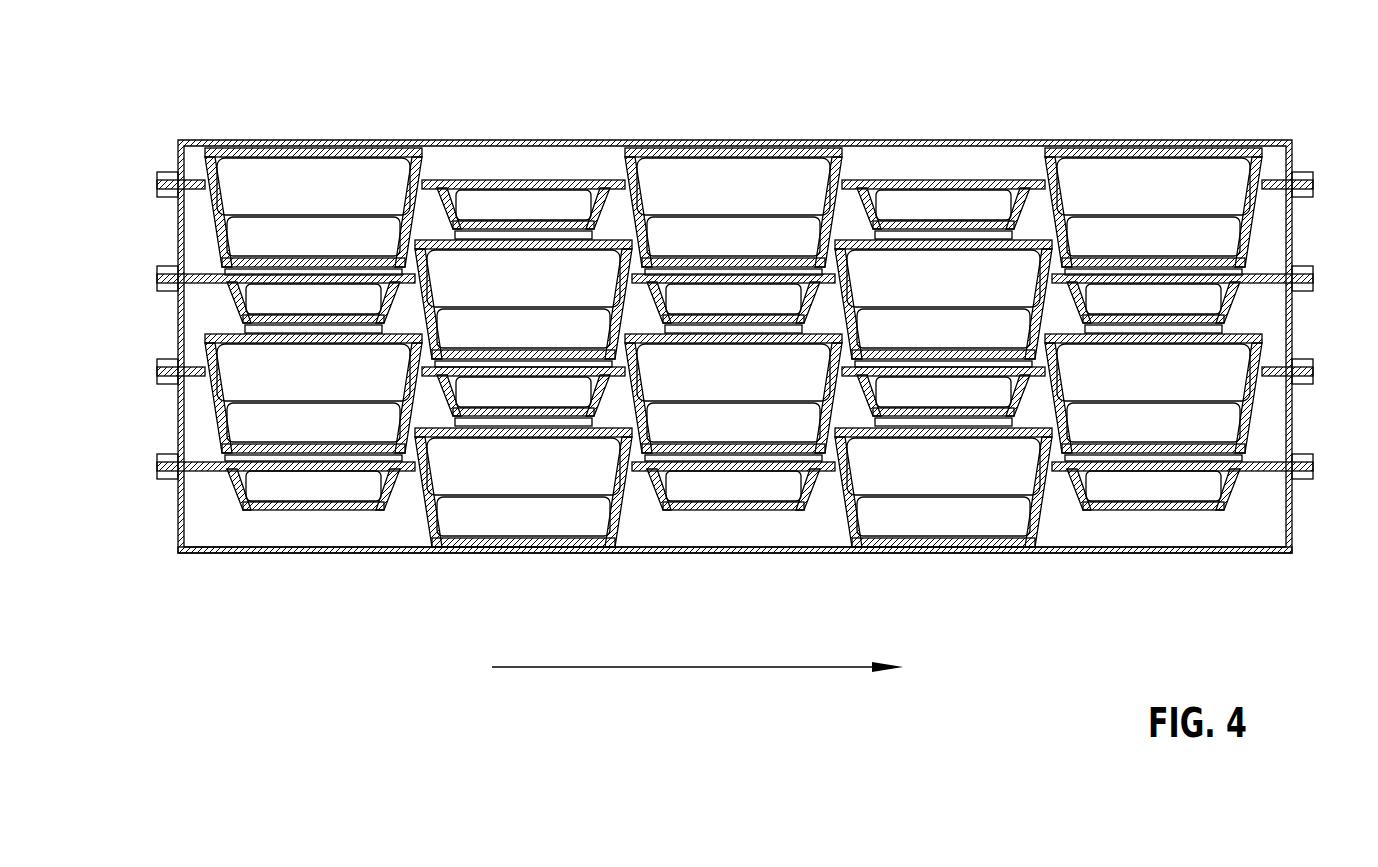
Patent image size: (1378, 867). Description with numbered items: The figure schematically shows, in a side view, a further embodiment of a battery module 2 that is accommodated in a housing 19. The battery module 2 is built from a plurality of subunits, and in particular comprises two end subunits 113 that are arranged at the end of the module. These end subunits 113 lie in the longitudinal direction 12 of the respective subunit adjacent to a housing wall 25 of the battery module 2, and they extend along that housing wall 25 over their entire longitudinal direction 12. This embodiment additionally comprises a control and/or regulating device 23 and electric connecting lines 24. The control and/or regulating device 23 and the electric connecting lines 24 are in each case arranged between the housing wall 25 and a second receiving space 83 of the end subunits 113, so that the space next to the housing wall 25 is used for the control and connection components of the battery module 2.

The battery module 2 is at (719, 374).
The longitudinal direction 12 is at (682, 668).
The housing 19 is at (1291, 232).
The control and/or regulating device 23 is at (362, 527).
The electric connecting lines 24 is at (568, 160).
The housing wall 25 is at (1070, 553).
The second receiving space 83 is at (497, 202).
The end subunits 113 is at (166, 231).